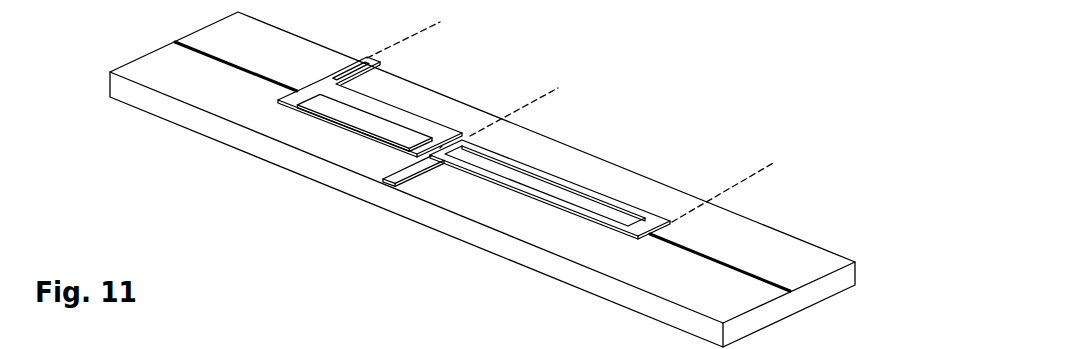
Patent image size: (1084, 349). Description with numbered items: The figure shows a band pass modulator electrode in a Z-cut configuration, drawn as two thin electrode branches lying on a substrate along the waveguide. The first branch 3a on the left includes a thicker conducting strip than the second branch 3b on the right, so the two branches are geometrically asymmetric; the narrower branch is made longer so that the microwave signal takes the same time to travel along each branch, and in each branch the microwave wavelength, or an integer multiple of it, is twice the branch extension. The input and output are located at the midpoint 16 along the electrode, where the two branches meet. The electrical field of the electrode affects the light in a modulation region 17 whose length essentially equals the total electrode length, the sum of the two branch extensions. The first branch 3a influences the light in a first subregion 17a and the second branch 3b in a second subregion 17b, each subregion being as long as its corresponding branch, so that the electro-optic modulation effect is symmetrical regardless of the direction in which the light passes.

The first branch 3a is at (323, 145).
The second branch 3b is at (502, 218).
The midpoint 16 is at (443, 139).
The modulation region 17 is at (757, 160).
The first subregion 17a is at (539, 84).
The second subregion 17b is at (747, 167).